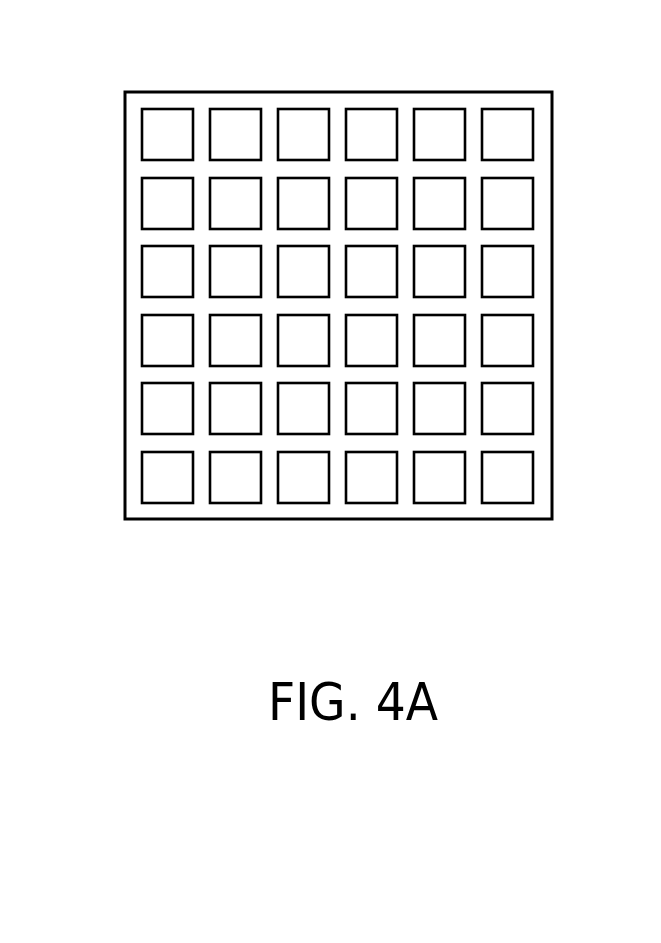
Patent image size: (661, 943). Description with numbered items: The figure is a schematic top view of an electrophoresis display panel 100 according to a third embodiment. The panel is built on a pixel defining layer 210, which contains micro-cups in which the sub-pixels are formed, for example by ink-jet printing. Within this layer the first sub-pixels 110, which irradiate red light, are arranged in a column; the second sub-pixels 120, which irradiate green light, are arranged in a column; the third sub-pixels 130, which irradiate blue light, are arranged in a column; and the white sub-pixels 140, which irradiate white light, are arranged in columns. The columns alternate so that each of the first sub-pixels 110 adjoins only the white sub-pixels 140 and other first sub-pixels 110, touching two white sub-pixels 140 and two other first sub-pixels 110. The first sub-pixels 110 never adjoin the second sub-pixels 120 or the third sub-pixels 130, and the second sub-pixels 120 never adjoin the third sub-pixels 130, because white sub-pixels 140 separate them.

The electrophoresis display panel 100 is at (625, 536).
The first sub-pixels 110 is at (250, 116).
The second sub-pixels 120 is at (387, 116).
The third sub-pixels 130 is at (493, 116).
The white sub-pixels 140 is at (183, 116).
The pixel defining layer 210 is at (542, 117).